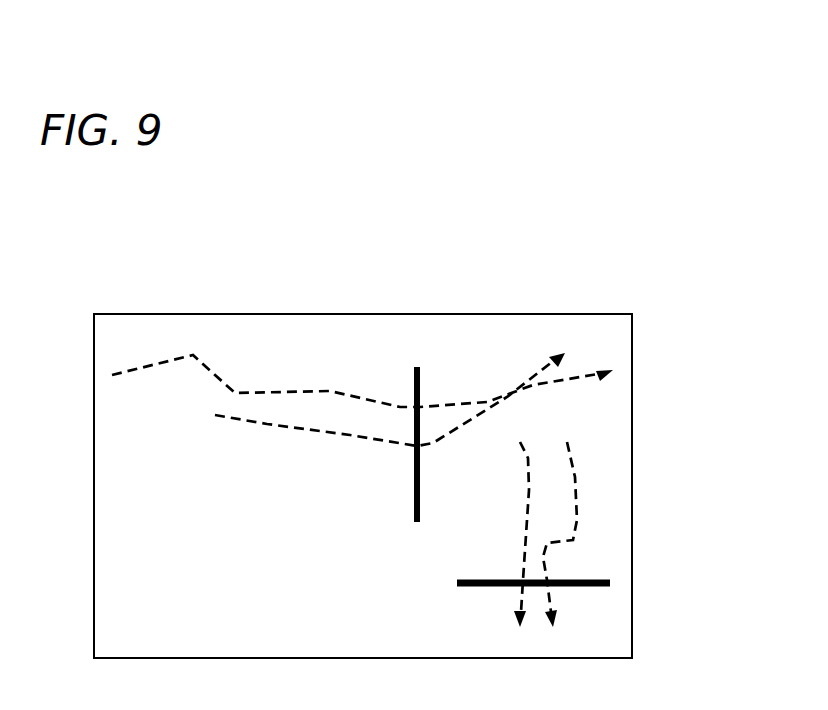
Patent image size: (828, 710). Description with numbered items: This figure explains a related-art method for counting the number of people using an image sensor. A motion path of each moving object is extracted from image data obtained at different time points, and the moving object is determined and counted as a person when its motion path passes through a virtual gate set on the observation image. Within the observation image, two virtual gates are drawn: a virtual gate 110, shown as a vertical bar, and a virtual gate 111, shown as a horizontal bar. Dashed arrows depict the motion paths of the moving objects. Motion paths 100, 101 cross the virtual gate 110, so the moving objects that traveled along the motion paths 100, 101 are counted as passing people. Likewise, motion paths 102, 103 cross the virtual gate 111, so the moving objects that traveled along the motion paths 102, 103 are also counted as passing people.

The motion path 100 is at (192, 355).
The motion path 101 is at (267, 424).
The motion path 102 is at (573, 472).
The motion path 103 is at (528, 457).
The virtual gate 110 is at (420, 383).
The virtual gate 111 is at (593, 580).